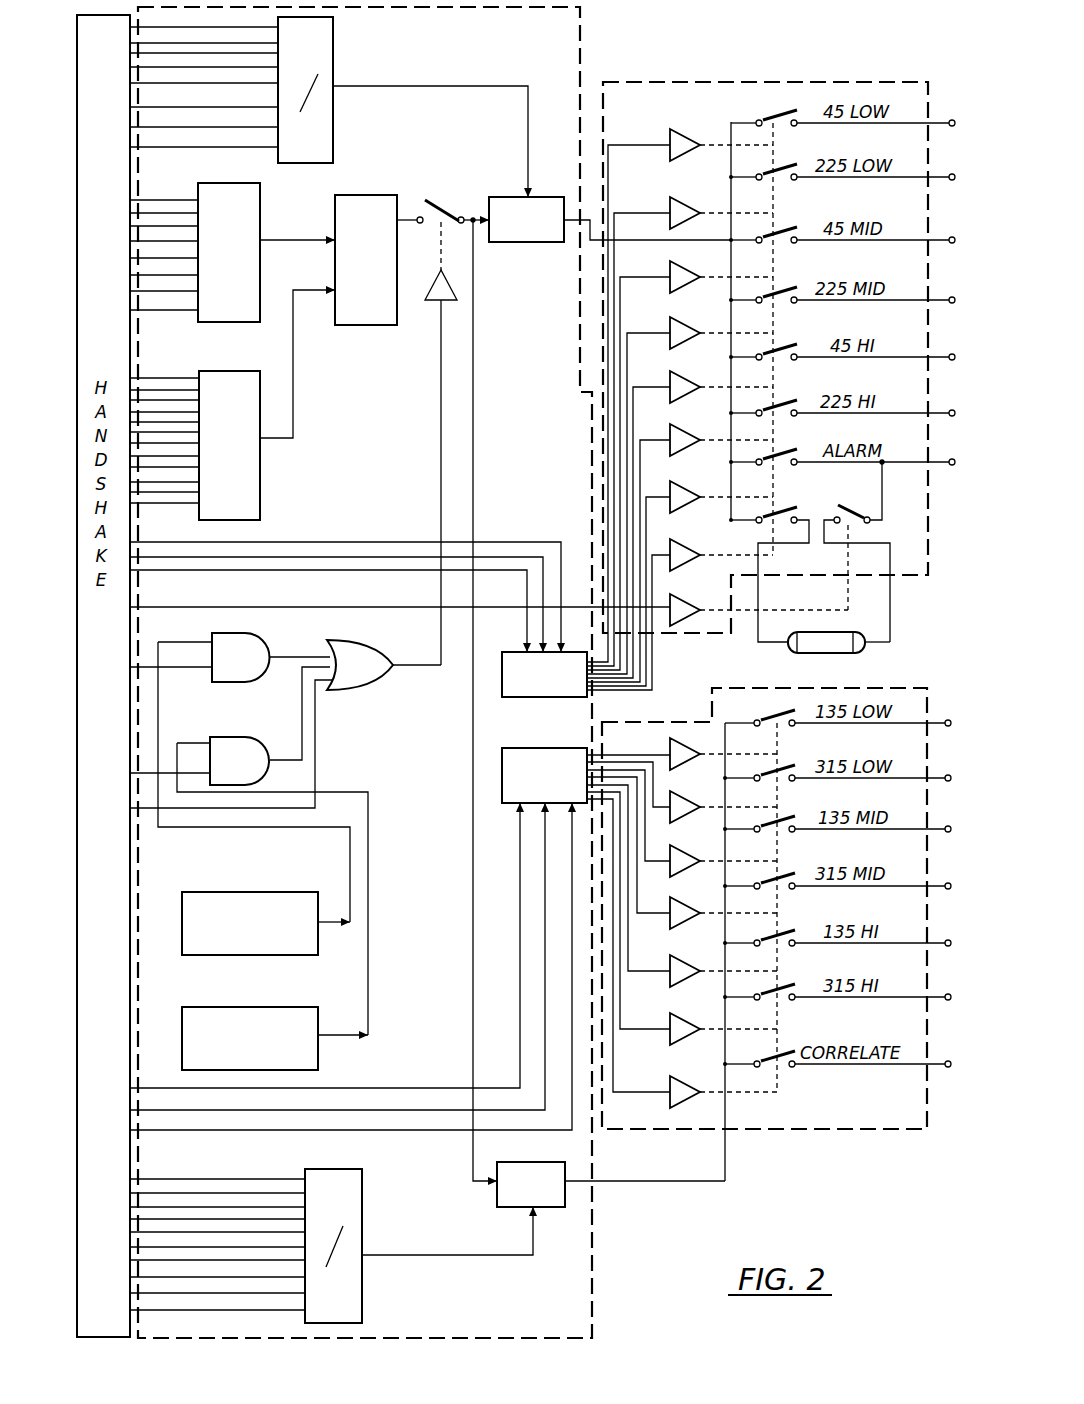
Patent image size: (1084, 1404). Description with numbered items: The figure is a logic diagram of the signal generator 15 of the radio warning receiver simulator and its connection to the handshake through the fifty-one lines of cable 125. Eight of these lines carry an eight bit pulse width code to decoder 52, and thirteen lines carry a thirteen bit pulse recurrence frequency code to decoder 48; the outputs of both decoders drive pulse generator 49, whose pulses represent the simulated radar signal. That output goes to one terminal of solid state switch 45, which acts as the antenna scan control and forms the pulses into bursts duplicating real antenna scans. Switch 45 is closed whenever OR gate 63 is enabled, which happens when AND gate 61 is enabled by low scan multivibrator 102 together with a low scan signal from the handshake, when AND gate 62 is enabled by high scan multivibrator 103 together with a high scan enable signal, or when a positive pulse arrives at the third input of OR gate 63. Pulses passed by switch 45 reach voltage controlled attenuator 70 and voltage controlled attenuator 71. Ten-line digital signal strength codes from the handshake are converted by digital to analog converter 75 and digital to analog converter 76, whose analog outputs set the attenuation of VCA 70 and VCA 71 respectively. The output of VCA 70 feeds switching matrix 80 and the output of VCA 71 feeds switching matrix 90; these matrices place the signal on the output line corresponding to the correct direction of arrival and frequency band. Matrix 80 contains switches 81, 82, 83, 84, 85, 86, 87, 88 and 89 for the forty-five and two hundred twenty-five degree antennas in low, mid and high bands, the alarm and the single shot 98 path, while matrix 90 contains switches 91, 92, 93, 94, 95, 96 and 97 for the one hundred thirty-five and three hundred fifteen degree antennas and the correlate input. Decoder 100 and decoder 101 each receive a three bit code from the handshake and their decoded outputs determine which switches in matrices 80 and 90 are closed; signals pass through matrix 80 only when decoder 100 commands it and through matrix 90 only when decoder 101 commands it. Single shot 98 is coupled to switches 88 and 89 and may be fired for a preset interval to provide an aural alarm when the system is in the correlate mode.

The signal generator 15 is at (583, 50).
The cable 125 is at (207, 26).
The digital to analog converter 75 is at (333, 55).
The decoder 52 is at (263, 208).
The decoder 48 is at (240, 371).
The pulse generator 49 is at (362, 195).
The solid state switch 45 is at (441, 200).
The voltage controlled attenuator 70 is at (508, 197).
The voltage controlled attenuator 71 is at (500, 1207).
The digital to analog converter 76 is at (362, 1198).
The switching matrix 80 is at (688, 82).
The switch 81 is at (768, 115).
The switch 82 is at (768, 169).
The switch 83 is at (768, 232).
The switch 84 is at (768, 292).
The switch 85 is at (768, 349).
The switch 86 is at (768, 405).
The switch 87 is at (768, 454).
The switch 88 is at (768, 512).
The switch 89 is at (838, 505).
The single shot 98 is at (788, 650).
The switching matrix 90 is at (678, 722).
The switch 91 is at (767, 715).
The switch 92 is at (767, 770).
The switch 93 is at (767, 821).
The switch 94 is at (767, 878).
The switch 95 is at (767, 935).
The switch 96 is at (767, 989).
The switch 97 is at (767, 1056).
The decoder 100 is at (540, 697).
The decoder 101 is at (540, 748).
The AND gate 61 is at (268, 640).
The AND gate 62 is at (255, 740).
The OR gate 63 is at (378, 645).
The low scan multivibrator 102 is at (240, 892).
The high scan multivibrator 103 is at (232, 1007).